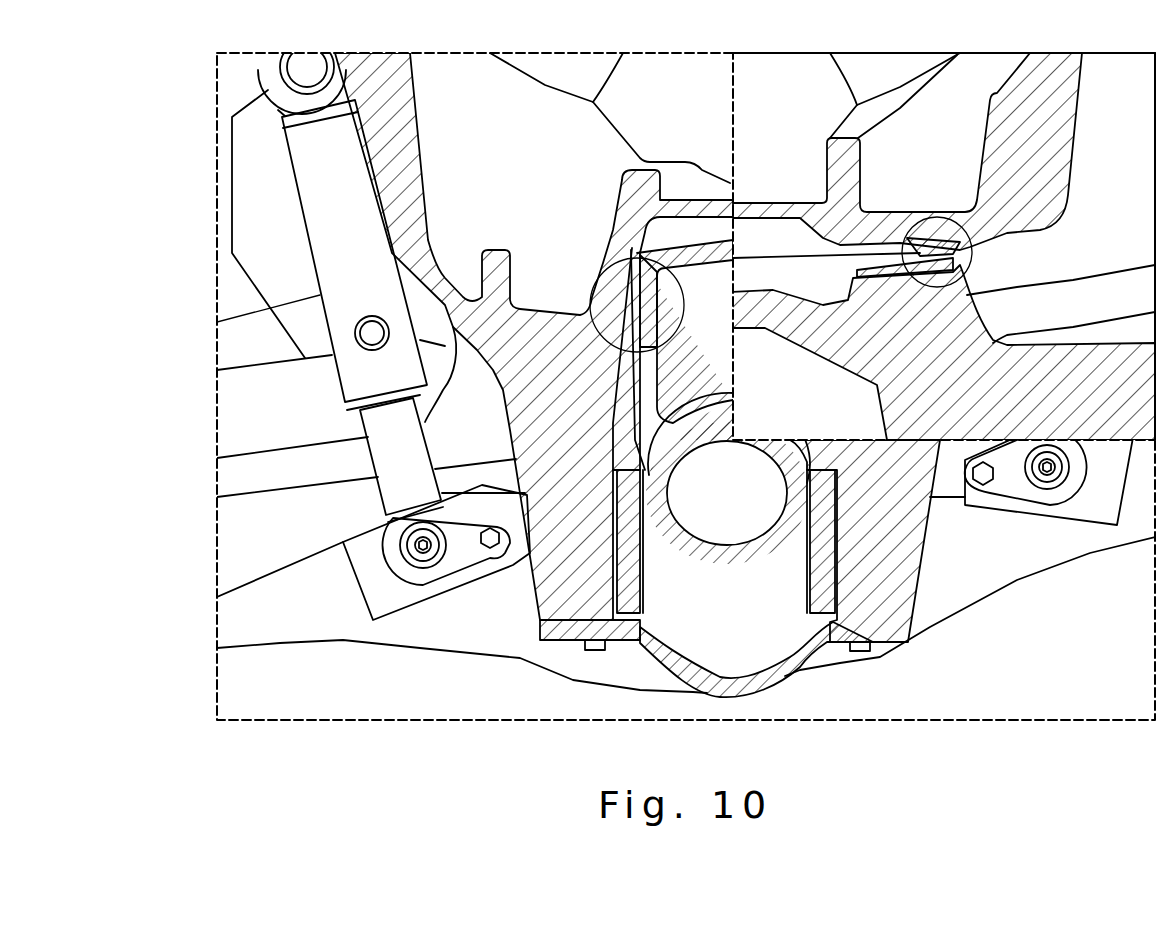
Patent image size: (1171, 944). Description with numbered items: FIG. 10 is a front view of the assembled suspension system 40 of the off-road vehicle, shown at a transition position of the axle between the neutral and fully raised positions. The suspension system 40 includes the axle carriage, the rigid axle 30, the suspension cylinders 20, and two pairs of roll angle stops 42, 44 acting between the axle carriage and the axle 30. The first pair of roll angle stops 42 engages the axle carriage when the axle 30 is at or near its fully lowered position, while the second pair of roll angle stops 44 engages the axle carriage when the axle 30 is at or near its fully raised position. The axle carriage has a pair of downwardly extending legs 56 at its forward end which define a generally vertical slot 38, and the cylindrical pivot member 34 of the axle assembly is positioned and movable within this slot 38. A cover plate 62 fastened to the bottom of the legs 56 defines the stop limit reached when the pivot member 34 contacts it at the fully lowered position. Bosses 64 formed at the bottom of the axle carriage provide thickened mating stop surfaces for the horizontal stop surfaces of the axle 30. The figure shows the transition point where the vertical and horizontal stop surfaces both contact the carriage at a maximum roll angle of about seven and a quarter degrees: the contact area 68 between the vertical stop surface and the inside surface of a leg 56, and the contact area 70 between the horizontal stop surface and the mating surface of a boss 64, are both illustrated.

The suspension cylinder 20 is at (300, 304).
The rigid axle 30 is at (345, 645).
The pivot member 34 is at (722, 568).
The slot 38 is at (721, 646).
The suspension system 40 is at (258, 612).
The first pair of roll angle stops 42 is at (635, 325).
The second pair of roll angle stops 44 is at (858, 272).
The leg 56 is at (913, 559).
The cover plate 62 is at (750, 697).
The boss 64 is at (937, 222).
The contact area 68 is at (630, 262).
The contact area 70 is at (973, 255).